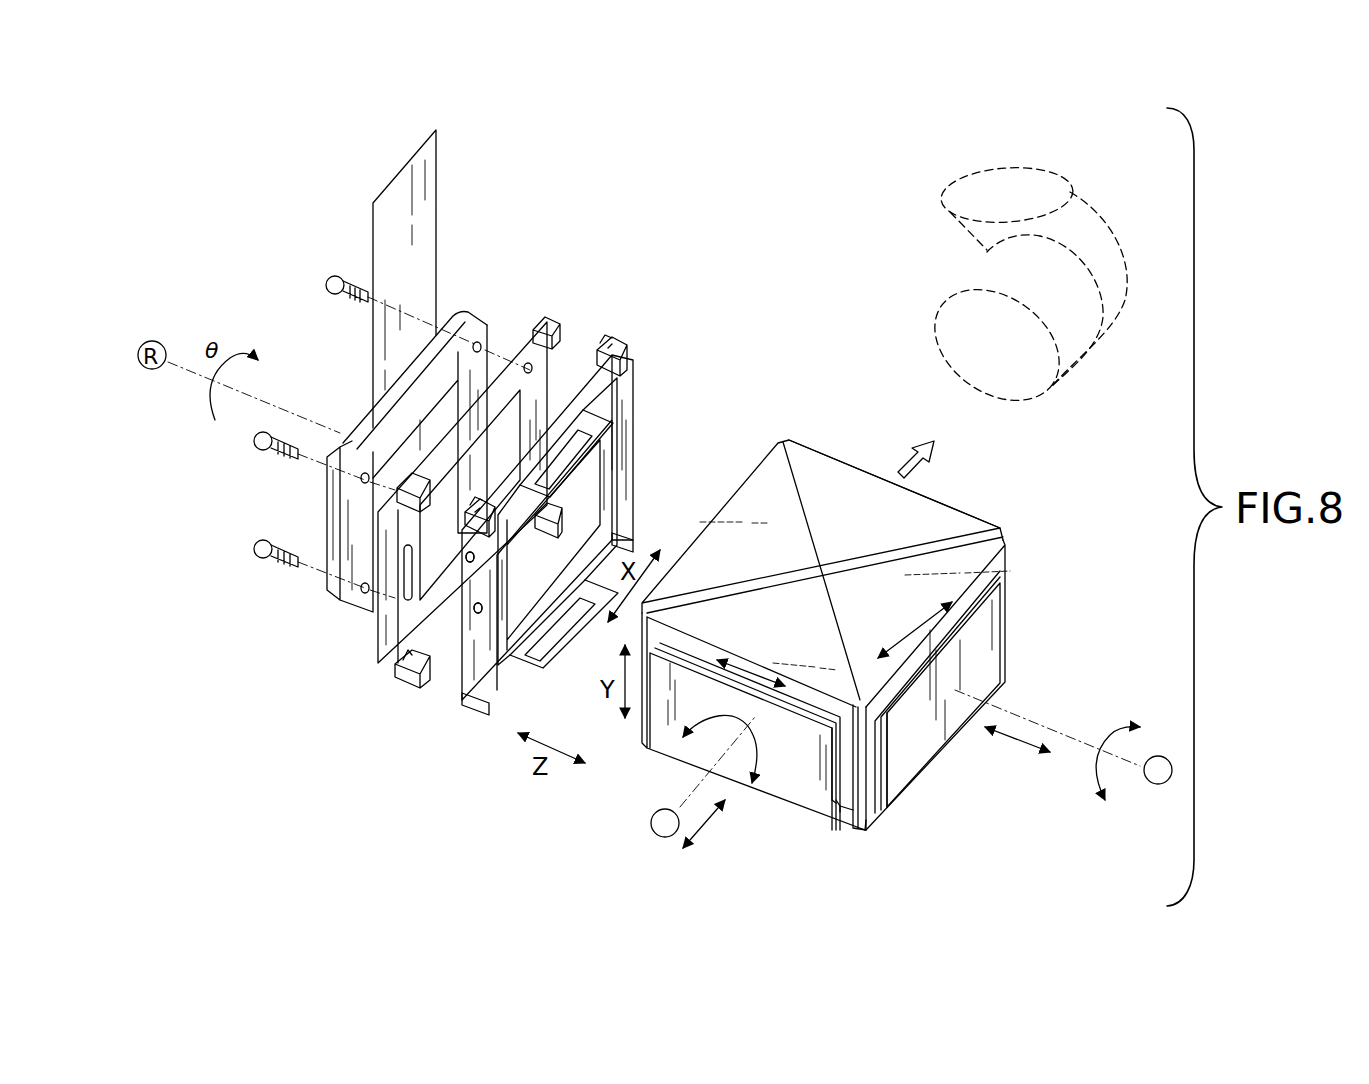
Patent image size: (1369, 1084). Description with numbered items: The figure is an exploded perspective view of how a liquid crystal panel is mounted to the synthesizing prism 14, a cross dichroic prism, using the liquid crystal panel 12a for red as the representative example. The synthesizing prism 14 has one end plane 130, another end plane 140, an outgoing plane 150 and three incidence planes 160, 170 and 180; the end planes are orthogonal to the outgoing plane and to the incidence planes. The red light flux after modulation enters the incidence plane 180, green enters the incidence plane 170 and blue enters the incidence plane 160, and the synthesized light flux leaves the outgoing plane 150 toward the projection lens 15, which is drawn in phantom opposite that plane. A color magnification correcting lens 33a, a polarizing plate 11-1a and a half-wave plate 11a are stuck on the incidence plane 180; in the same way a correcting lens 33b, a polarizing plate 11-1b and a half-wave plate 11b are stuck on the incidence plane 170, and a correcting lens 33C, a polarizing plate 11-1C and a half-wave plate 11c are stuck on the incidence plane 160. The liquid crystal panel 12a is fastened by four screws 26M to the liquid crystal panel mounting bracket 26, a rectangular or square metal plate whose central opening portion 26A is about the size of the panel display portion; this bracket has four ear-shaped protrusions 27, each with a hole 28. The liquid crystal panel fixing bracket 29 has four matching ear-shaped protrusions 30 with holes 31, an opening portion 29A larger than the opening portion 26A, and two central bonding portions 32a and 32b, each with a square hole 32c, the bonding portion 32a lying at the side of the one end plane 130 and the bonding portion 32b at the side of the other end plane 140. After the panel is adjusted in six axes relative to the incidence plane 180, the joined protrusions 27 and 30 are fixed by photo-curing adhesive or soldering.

The liquid crystal panel 12a is at (478, 305).
The screws 26M is at (330, 278).
The liquid crystal panel mounting bracket 26 is at (540, 412).
The opening portion 26A is at (405, 580).
The ear-shaped protrusions 27 is at (547, 318).
The hole 28 is at (400, 662).
The liquid crystal panel fixing bracket 29 is at (628, 395).
The opening portion 29A is at (478, 600).
The ear-shaped protrusions 30 is at (605, 340).
The hole 31 is at (615, 350).
The bonding portion 32a is at (615, 440).
The bonding portion 32b is at (601, 548).
The square holes 32c is at (560, 628).
The synthesizing prism 14 is at (801, 644).
The projection lens 15 is at (1080, 355).
The incidence plane 180 is at (718, 500).
The one end plane 130 is at (856, 588).
The outgoing plane 150 is at (960, 520).
The half-wave plate 11a is at (647, 721).
The polarizing plate 11-1a is at (647, 721).
The color magnification correcting lens 33a is at (632, 740).
The half-wave plate 11c is at (986, 678).
The polarizing plate 11-1C is at (986, 678).
The color magnification correcting lens 33C is at (990, 565).
The incidence plane 160 is at (893, 710).
The incidence plane 170 is at (822, 700).
The other end plane 140 is at (880, 818).
The half-wave plate 11b is at (838, 812).
The color magnification correcting lens 33b is at (845, 818).
The polarizing plate 11-1b is at (850, 825).